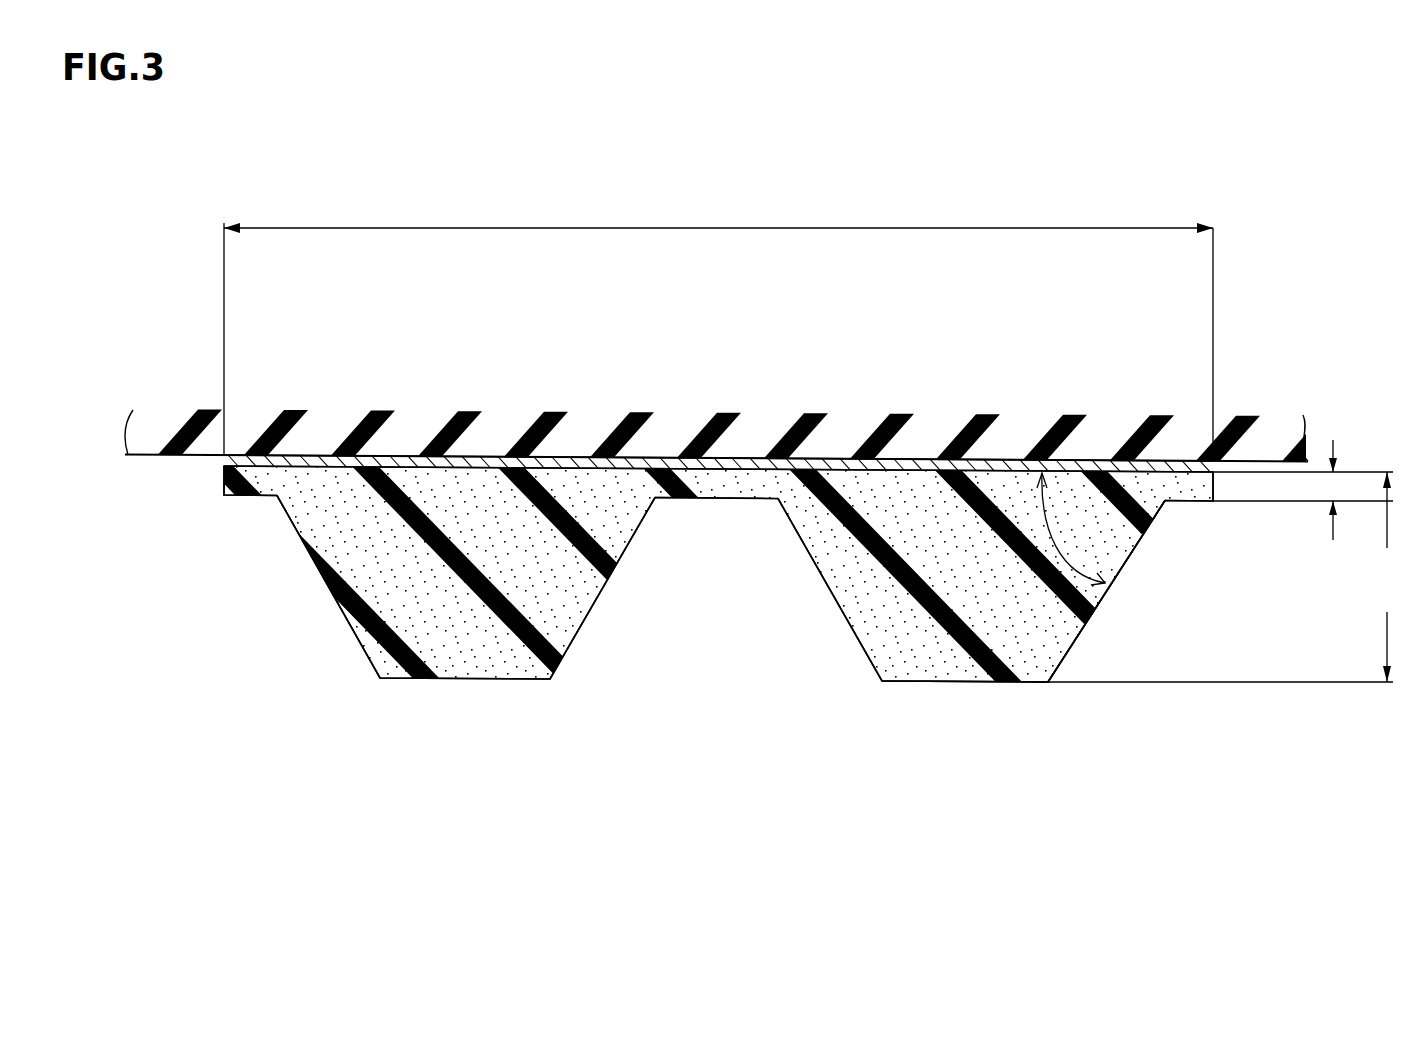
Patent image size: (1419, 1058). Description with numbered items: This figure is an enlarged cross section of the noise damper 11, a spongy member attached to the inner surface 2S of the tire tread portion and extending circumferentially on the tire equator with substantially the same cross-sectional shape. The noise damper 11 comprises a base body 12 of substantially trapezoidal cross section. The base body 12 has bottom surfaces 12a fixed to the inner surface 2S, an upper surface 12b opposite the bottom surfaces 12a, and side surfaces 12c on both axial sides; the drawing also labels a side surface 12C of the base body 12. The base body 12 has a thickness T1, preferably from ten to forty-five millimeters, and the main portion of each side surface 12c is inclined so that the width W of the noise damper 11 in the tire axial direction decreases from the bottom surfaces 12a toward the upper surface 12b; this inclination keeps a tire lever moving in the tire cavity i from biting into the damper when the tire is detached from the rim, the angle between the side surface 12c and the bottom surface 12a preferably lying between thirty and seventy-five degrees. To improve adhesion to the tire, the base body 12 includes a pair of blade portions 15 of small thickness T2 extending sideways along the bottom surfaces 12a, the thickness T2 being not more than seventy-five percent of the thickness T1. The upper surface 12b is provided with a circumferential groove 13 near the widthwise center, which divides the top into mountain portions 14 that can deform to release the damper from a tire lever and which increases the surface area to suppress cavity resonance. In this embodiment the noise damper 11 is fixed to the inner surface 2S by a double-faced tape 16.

The noise damper 11 is at (842, 738).
The base body 12 is at (898, 665).
The bottom surface 12a is at (448, 466).
The upper surface 12b is at (1030, 685).
The side surface 12c is at (1123, 563).
The tooth 12C is at (353, 636).
The groove 13 is at (740, 599).
The mountain portion 14 is at (482, 658).
The blade portion 15 is at (233, 497).
The double-faced tape 16 is at (492, 462).
The inner surface 2S is at (285, 459).
The tire cavity i is at (731, 793).
The width W is at (718, 338).
The thickness T1 is at (1227, 577).
The thickness T2 is at (1303, 490).